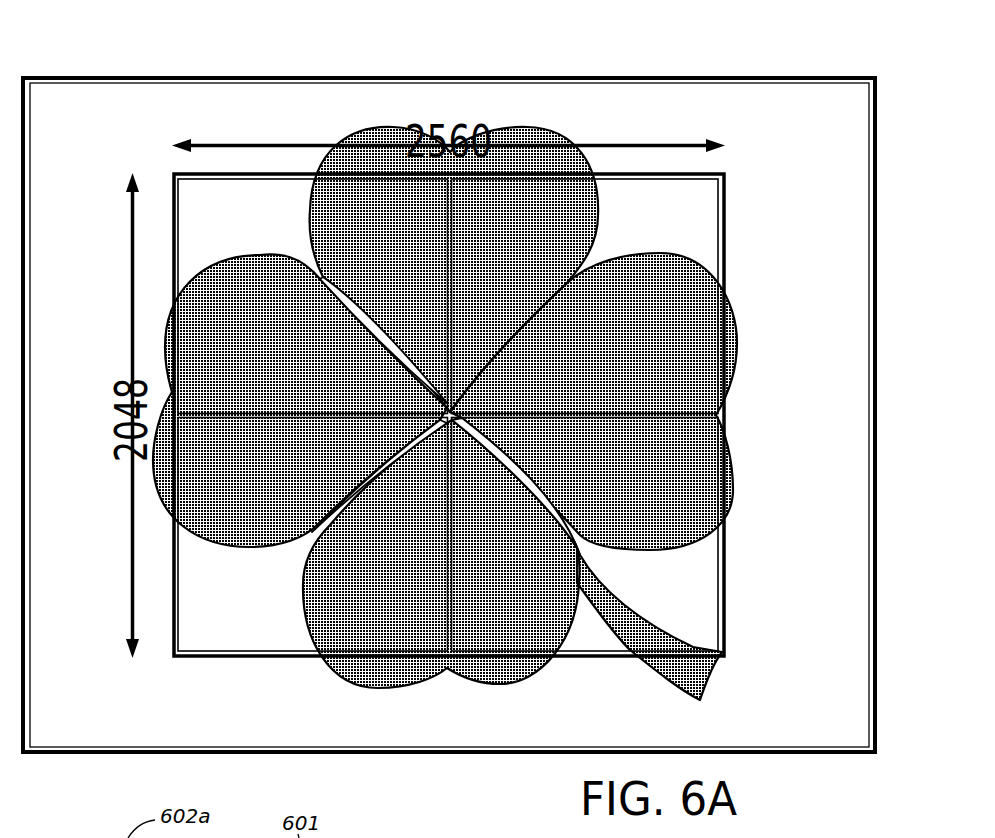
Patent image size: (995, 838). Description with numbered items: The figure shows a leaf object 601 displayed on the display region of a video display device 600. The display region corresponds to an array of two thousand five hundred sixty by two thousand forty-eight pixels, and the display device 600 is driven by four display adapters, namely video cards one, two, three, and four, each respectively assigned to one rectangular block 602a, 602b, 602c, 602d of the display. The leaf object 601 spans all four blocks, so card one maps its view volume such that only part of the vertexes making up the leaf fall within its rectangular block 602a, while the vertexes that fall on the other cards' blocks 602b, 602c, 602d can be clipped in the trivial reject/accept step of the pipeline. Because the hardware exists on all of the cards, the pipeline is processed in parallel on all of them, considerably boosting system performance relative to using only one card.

The video display device 600 is at (703, 73).
The leaf object 601 is at (600, 200).
The rectangular block 602a is at (172, 272).
The rectangular block 602b is at (730, 267).
The rectangular block 602c is at (172, 572).
The rectangular block 602d is at (730, 573).